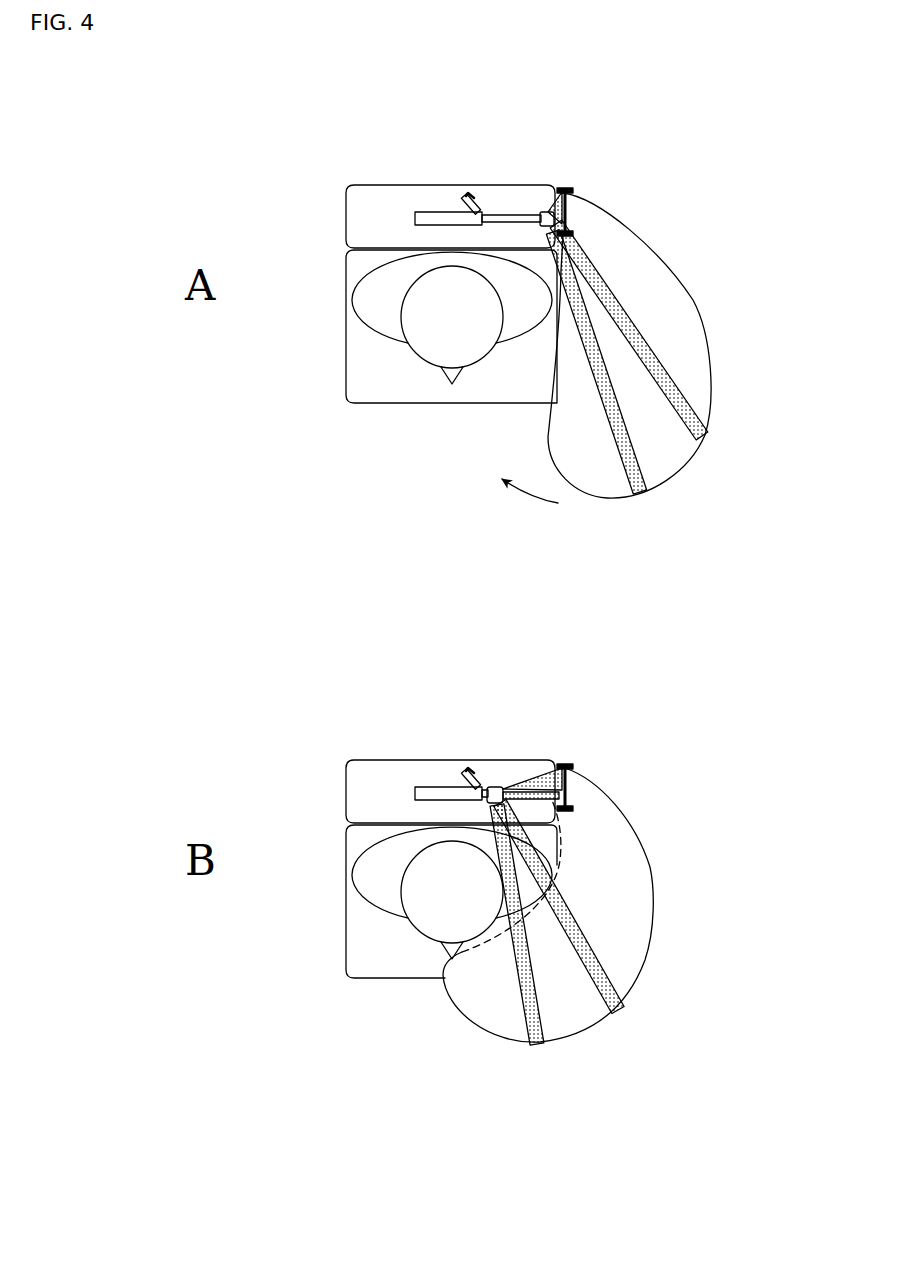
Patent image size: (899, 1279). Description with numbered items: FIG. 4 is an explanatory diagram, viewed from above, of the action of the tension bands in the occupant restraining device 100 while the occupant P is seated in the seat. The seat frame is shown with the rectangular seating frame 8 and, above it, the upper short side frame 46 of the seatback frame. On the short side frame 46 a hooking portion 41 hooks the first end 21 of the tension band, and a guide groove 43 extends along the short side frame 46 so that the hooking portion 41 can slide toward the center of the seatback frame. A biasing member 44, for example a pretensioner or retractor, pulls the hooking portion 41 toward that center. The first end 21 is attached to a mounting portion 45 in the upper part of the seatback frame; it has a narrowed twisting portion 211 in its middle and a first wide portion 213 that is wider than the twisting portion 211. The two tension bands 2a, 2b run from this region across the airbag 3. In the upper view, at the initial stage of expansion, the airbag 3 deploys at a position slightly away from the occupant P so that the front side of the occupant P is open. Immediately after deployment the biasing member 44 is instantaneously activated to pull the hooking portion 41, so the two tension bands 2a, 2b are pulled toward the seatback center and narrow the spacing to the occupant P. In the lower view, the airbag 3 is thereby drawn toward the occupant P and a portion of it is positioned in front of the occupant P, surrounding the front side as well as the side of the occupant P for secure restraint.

The occupant restraining device 100 is at (603, 448).
The upper short side frame 46 is at (362, 194).
The biasing member 44 is at (430, 216).
The guide groove 43 is at (492, 215).
The hooking portion 41 is at (556, 212).
The mounting portion 45 is at (565, 189).
The first wide portion 213 is at (548, 200).
The twisting portion 211 is at (565, 244).
The first end 21 is at (602, 448).
The airbag 3 is at (721, 296).
The tension band 2a is at (698, 430).
The tension band 2b is at (642, 488).
The seating frame 8 is at (387, 405).
The occupant P is at (366, 345).